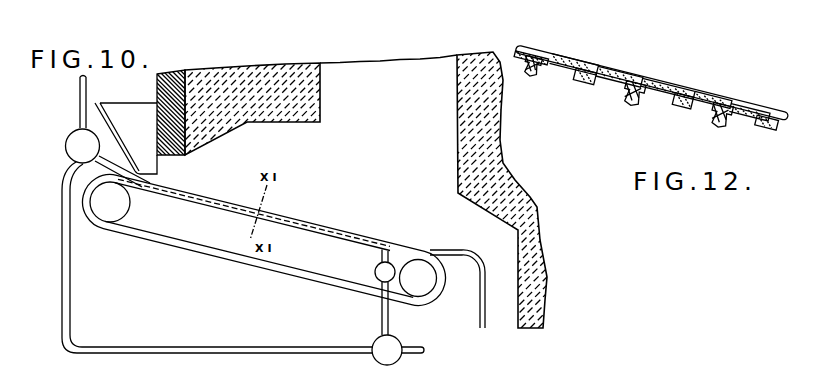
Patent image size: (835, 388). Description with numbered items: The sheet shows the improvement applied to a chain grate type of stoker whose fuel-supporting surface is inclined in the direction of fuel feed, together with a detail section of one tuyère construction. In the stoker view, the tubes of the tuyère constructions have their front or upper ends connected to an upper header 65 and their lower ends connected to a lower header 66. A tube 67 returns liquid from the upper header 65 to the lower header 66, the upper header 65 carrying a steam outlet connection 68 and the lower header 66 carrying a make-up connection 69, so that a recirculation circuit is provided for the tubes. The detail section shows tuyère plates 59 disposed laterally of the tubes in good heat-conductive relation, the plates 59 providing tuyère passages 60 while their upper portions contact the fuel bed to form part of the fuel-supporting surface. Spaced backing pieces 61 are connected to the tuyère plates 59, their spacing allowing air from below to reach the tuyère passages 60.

In FIG. 10, the steam outlet connection 68 is at (80, 98).
In FIG. 10, the upper header 65 is at (75, 145).
In FIG. 10, the tube 67 is at (68, 257).
In FIG. 10, the lower header 66 is at (394, 343).
In FIG. 10, the make-up connection 69 is at (407, 353).
In FIG. 12, the tuyère plates 59 is at (578, 63).
In FIG. 12, the tuyère passages 60 is at (590, 76).
In FIG. 12, the backing pieces 61 is at (643, 94).